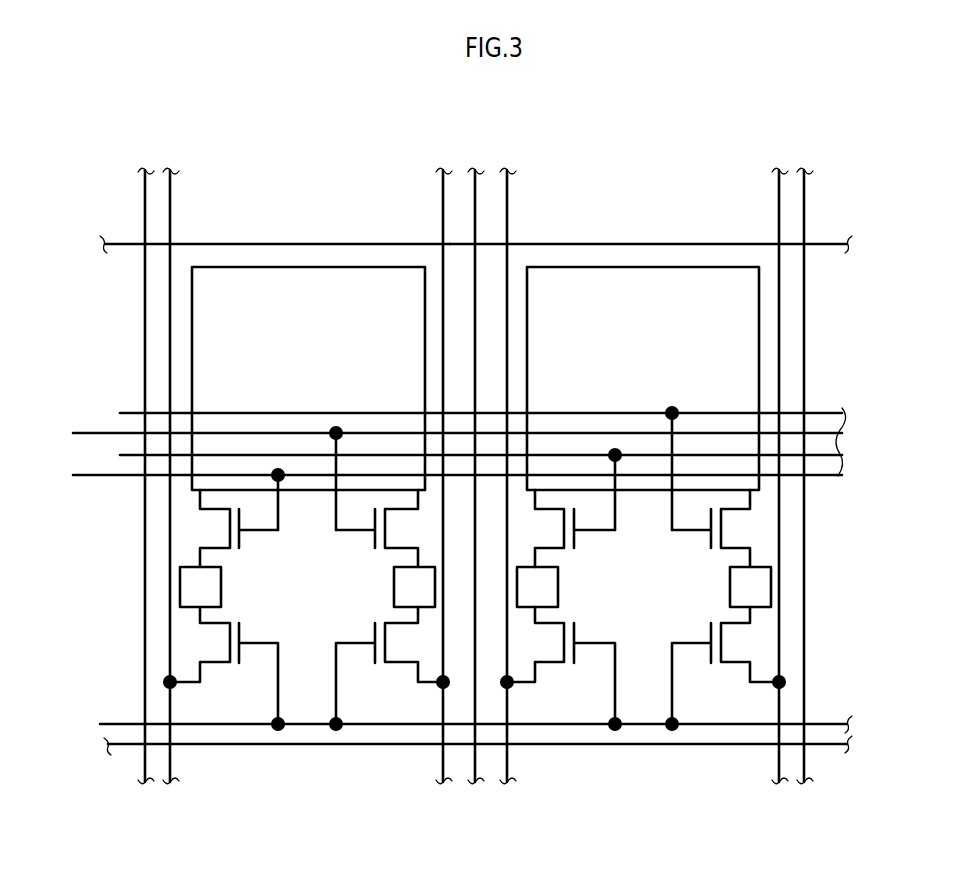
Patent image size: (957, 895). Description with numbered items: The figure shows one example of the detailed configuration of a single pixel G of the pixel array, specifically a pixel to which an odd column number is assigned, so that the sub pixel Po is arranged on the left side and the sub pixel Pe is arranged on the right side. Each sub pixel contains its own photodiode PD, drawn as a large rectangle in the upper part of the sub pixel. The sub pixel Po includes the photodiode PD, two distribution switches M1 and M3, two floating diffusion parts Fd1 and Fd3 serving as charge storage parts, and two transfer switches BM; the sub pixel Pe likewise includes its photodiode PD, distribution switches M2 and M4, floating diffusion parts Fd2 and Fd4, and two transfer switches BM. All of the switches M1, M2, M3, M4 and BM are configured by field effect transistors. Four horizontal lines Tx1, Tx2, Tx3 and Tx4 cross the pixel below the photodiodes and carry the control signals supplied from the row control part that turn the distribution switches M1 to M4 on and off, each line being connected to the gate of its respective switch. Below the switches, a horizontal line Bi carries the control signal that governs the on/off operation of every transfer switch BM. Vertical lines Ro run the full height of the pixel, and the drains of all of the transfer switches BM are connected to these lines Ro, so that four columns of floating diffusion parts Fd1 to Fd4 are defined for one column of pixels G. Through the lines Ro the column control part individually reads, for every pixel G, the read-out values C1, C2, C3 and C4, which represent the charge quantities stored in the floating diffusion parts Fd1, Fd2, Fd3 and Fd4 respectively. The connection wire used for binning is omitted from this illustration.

The pixel G is at (615, 165).
The sub pixel Po is at (319, 244).
The sub pixel Pe is at (634, 243).
The photodiode PD is at (475, 378).
The line Tx1 is at (439, 496).
The line Tx2 is at (459, 484).
The line Tx3 is at (439, 473).
The line Tx4 is at (459, 462).
The distribution switch M1 is at (239, 528).
The distribution switch M2 is at (575, 528).
The distribution switch M3 is at (377, 528).
The distribution switch M4 is at (711, 528).
The floating diffusion part Fd1 is at (228, 587).
The floating diffusion part Fd2 is at (564, 587).
The floating diffusion part Fd3 is at (387, 587).
The floating diffusion part Fd4 is at (722, 587).
The transfer switch BM is at (474, 665).
The read-out value C1 is at (197, 597).
The read-out value C2 is at (540, 588).
The read-out value C3 is at (425, 590).
The read-out value C4 is at (755, 586).
The line Bi is at (121, 722).
The line Ro is at (171, 758).